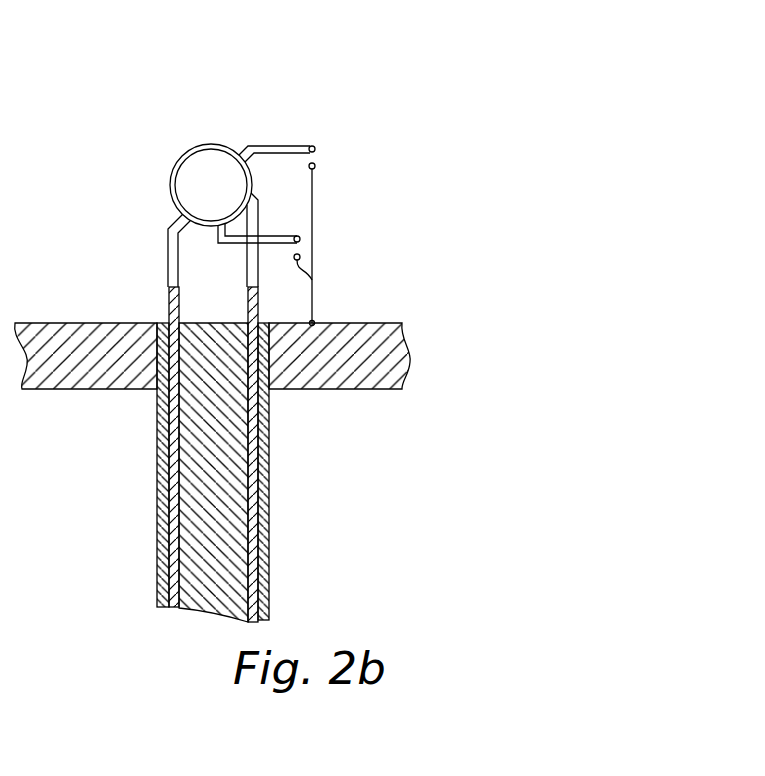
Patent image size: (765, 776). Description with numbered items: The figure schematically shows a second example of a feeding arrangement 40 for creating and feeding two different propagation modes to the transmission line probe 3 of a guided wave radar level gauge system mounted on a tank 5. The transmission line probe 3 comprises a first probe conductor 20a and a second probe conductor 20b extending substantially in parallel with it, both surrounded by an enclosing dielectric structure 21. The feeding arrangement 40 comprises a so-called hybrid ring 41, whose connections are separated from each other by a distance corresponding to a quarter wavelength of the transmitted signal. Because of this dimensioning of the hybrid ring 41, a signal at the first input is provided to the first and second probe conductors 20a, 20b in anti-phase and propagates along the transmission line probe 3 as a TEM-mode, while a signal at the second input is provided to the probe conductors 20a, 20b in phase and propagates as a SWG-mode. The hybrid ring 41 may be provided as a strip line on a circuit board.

The transmission line probe 3 is at (313, 533).
The tank 5 is at (338, 390).
The first probe conductor 20a is at (176, 549).
The second probe conductor 20b is at (252, 580).
The enclosing dielectric structure 21 is at (164, 502).
The feeding arrangement 40 is at (314, 98).
The hybrid ring 41 is at (172, 155).